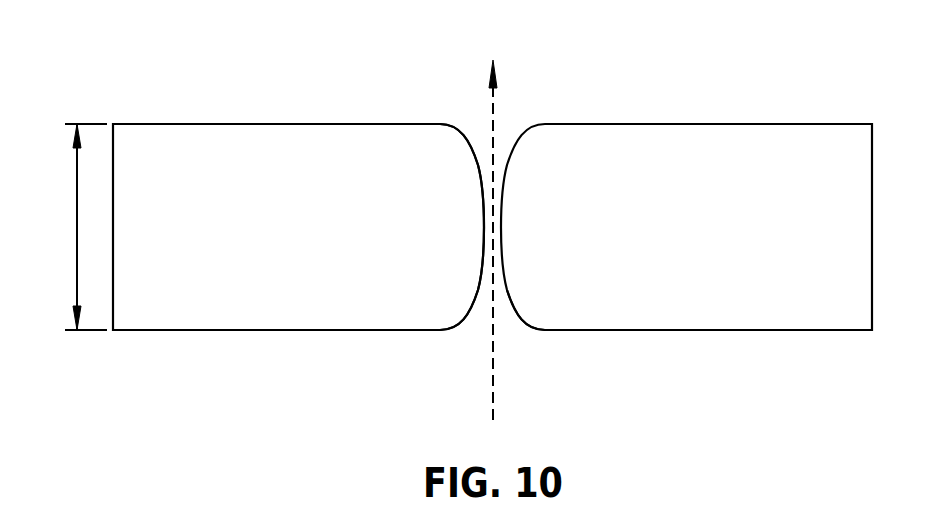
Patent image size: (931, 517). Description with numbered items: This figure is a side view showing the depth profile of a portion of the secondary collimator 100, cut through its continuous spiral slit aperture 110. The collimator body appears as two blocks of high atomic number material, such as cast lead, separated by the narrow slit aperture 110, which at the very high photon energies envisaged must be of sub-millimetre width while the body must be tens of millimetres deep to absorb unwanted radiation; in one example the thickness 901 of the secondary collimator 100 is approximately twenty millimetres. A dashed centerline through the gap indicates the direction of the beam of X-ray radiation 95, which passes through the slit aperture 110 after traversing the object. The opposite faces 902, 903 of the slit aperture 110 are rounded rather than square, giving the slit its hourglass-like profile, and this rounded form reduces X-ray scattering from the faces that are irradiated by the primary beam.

The secondary collimator 100 is at (321, 232).
The slit aperture 110 is at (473, 133).
The beam of X-ray radiation 95 is at (497, 68).
The thickness 901 is at (77, 235).
The opposite face 902 is at (473, 317).
The opposite face 903 is at (517, 318).